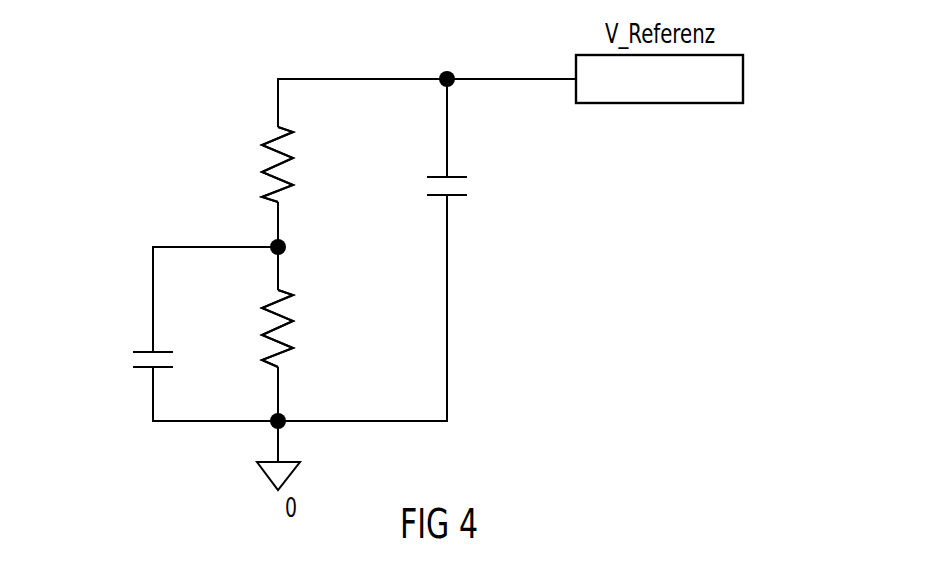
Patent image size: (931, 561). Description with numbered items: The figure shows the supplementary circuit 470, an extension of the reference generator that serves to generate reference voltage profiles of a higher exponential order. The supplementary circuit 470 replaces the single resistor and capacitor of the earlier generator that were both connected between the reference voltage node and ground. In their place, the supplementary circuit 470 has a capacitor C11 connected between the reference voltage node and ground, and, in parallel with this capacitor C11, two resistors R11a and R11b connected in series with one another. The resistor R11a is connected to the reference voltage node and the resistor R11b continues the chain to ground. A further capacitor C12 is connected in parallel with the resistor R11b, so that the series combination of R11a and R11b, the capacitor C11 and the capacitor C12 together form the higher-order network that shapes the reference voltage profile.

The supplementary circuit 470 is at (193, 88).
The resistor R11a is at (309, 164).
The resistor R11b is at (311, 328).
The capacitor C11 is at (462, 167).
The capacitor C12 is at (166, 341).